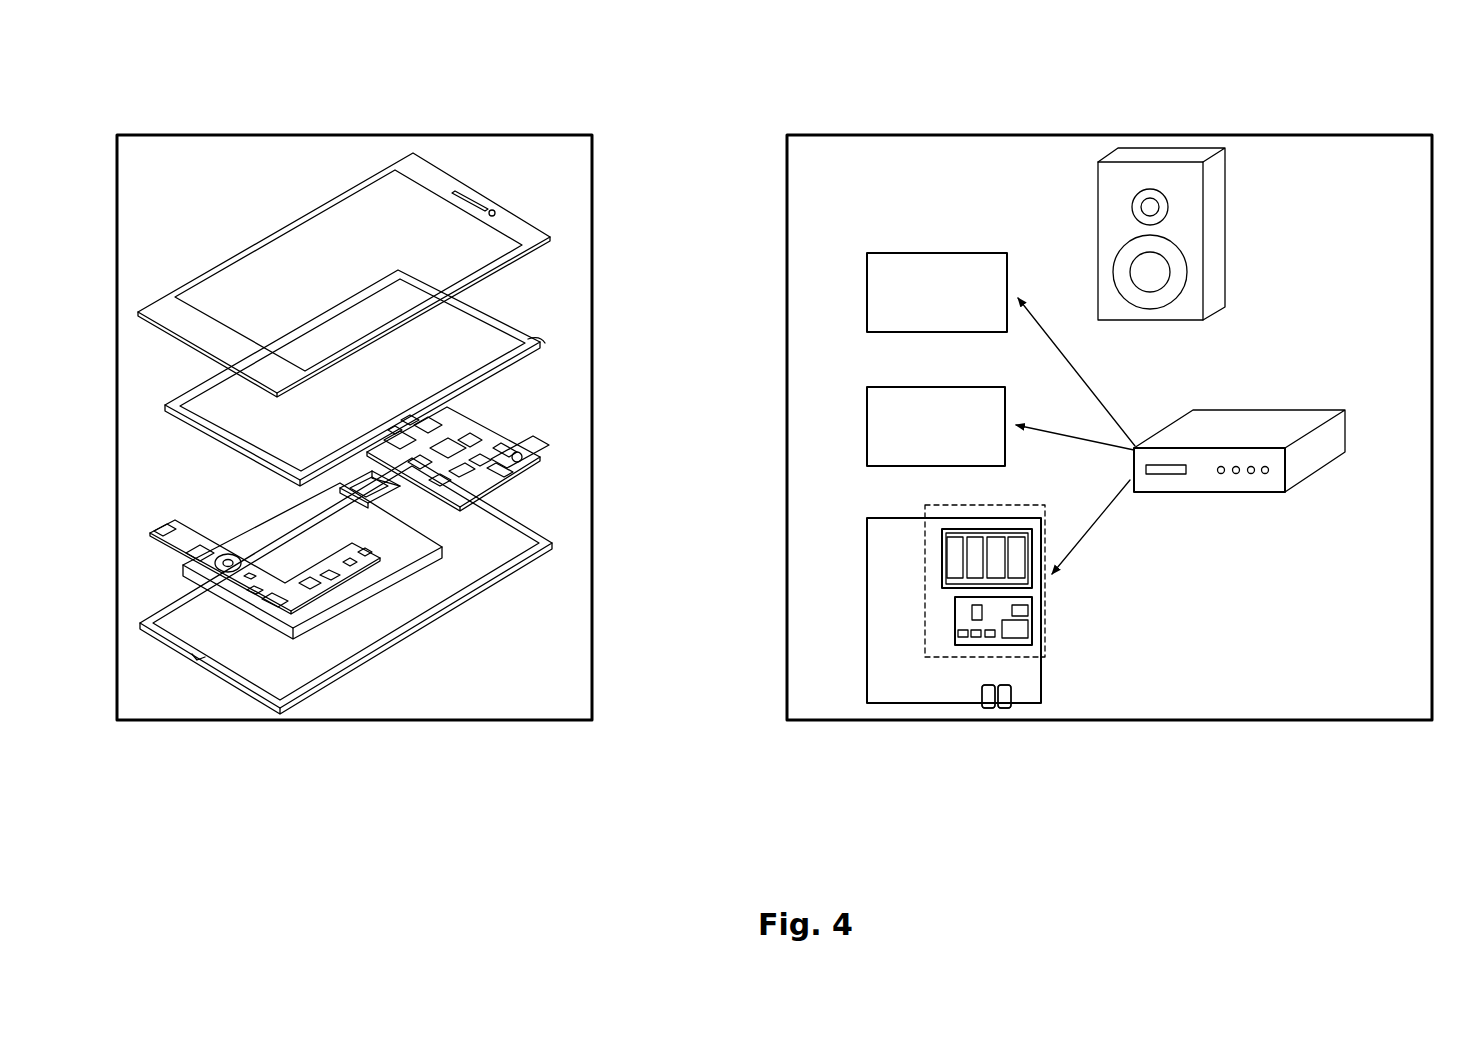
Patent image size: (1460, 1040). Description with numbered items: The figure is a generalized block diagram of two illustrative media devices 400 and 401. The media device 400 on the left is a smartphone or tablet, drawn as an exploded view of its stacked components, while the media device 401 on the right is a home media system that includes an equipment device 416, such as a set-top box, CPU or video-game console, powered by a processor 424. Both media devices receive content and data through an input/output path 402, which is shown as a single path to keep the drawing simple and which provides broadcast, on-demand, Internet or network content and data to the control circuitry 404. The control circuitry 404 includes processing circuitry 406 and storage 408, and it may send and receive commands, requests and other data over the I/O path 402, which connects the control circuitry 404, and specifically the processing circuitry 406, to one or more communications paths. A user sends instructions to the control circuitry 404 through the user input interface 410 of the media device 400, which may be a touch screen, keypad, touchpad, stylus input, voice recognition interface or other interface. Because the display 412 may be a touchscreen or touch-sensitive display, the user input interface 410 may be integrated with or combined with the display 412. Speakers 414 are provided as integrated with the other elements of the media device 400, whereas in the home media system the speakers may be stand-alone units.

The media device 400 is at (178, 84).
The media device 401 is at (1349, 80).
The I/O path 402 is at (228, 574).
The control circuitry 404 is at (913, 628).
The processing circuitry 406 is at (950, 616).
The storage 408 is at (937, 552).
The user input interface 410 is at (858, 291).
The display 412 is at (858, 417).
The speakers 414 is at (1090, 237).
The equipment device 416 is at (1263, 406).
The processor 424 is at (1041, 683).